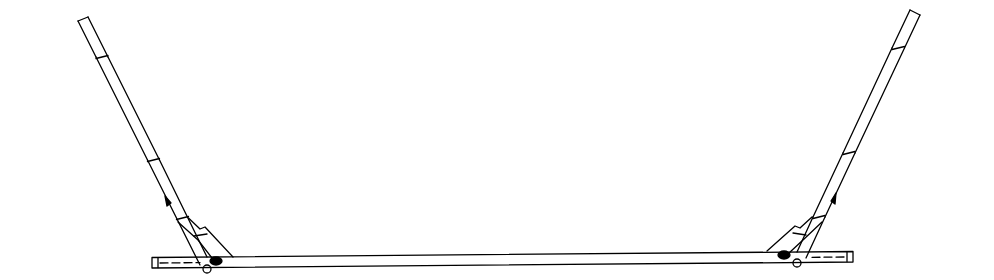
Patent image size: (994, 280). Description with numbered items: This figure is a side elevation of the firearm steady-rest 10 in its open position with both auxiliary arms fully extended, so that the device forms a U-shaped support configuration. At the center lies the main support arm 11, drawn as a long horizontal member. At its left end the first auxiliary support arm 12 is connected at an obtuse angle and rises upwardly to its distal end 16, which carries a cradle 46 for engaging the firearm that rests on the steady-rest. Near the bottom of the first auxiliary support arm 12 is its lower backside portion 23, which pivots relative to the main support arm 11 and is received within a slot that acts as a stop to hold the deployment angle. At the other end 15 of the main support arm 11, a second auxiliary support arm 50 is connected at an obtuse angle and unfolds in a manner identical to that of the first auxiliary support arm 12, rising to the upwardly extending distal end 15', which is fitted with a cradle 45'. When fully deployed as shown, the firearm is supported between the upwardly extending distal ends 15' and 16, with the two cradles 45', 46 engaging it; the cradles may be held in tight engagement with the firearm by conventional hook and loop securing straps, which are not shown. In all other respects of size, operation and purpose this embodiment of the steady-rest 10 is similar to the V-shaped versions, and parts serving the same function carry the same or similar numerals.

The firearm steady-rest 10 is at (626, 198).
The main support arm 11 is at (428, 255).
The first auxiliary support arm 12 is at (150, 135).
The other end of main support arm 15 is at (765, 218).
The upwardly extending distal end 15' is at (797, 165).
The upwardly extending distal end 16 is at (115, 70).
The lower backside portion 23 is at (193, 248).
The cradle 45' is at (861, 25).
The cradle 46 is at (136, 38).
The second auxiliary support arm 50 is at (865, 107).